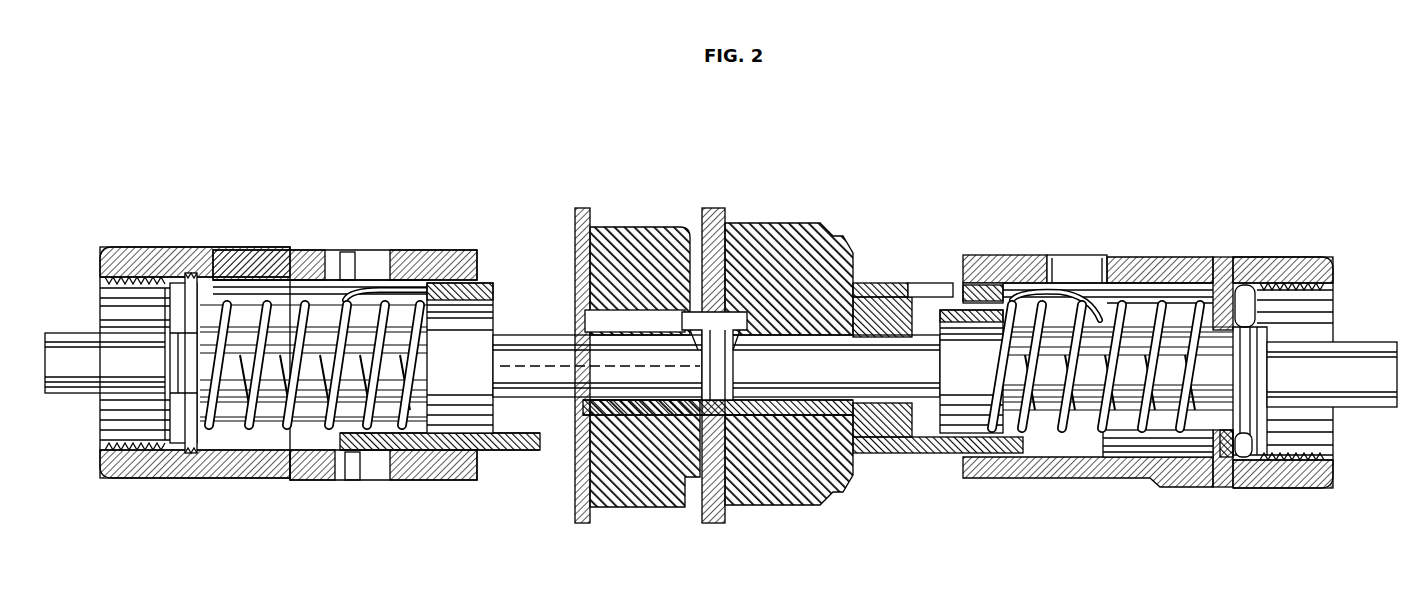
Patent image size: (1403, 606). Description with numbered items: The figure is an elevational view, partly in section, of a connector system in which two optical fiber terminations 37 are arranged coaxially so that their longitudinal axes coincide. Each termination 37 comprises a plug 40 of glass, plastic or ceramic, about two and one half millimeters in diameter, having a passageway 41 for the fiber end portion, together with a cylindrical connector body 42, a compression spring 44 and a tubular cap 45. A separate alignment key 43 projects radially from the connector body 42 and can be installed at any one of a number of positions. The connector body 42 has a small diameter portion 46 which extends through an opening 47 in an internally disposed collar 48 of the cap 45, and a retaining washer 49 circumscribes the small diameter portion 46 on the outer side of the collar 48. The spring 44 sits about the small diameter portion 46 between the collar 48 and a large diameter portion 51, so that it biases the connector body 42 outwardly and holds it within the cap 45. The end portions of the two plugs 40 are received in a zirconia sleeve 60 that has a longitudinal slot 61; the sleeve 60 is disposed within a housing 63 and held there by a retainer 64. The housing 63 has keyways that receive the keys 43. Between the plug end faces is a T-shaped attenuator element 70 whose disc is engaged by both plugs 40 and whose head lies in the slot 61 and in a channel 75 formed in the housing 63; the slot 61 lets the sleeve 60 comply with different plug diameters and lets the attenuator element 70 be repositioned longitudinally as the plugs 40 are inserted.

The termination 37 is at (1197, 257).
The plug 40 is at (560, 345).
The passageway 41 is at (513, 367).
The connector body 42 is at (960, 455).
The alignment key 43 is at (990, 300).
The compression spring 44 is at (1105, 325).
The tubular cap 45 is at (1175, 478).
The small diameter portion 46 is at (1120, 410).
The opening 47 is at (1242, 310).
The collar 48 is at (1223, 443).
The retaining washer 49 is at (1250, 455).
The large diameter portion 51 is at (977, 410).
The sleeve 60 is at (623, 503).
The longitudinal slot 61 is at (625, 337).
The housing 63 is at (640, 493).
The retainer 64 is at (898, 322).
The attenuator element 70 is at (763, 347).
The channel 75 is at (660, 323).